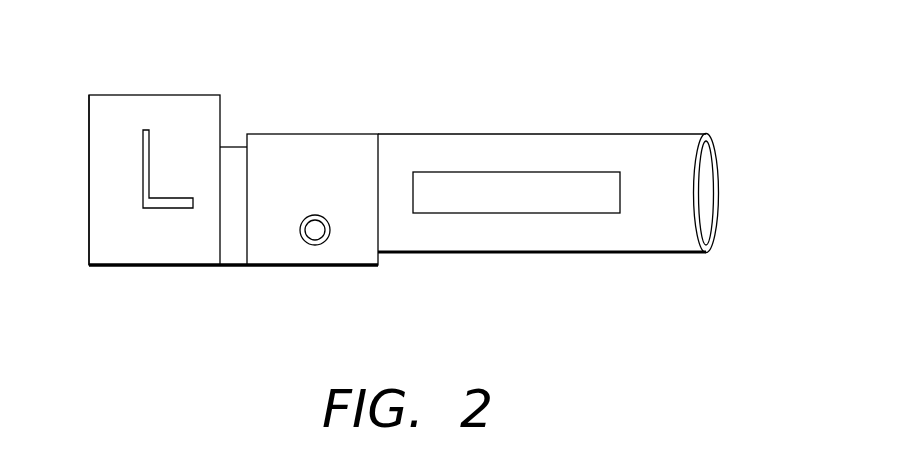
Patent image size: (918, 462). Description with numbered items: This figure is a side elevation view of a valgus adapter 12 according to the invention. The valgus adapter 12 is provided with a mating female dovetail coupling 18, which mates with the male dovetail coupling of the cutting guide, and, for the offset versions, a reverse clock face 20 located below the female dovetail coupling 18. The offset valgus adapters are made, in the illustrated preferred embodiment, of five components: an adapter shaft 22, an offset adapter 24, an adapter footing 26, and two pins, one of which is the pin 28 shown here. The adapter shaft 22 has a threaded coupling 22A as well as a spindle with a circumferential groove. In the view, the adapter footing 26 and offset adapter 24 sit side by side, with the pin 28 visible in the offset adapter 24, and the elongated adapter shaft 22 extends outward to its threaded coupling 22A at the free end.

The valgus adapter 12 is at (185, 287).
The female dovetail coupling 18 is at (147, 95).
The reverse clock face 20 is at (88, 235).
The adapter shaft 22 is at (478, 148).
The threaded coupling 22A is at (715, 193).
The offset adapter 24 is at (305, 148).
The adapter footing 26 is at (186, 113).
The pin 28 is at (325, 241).